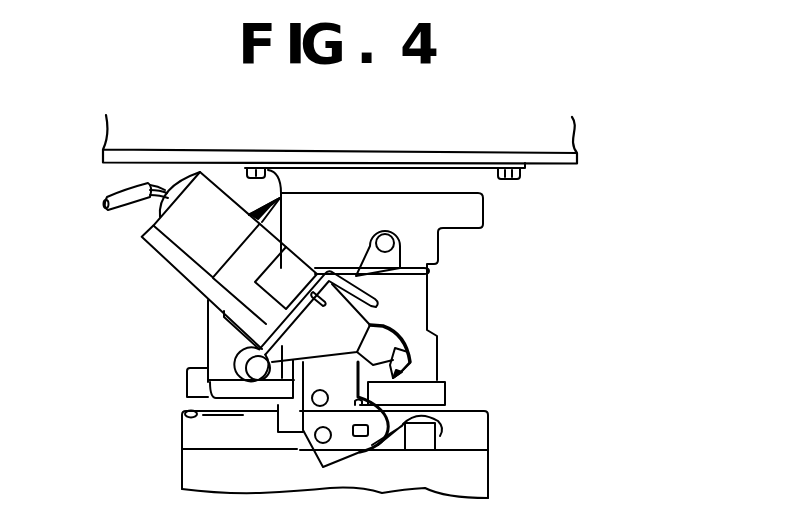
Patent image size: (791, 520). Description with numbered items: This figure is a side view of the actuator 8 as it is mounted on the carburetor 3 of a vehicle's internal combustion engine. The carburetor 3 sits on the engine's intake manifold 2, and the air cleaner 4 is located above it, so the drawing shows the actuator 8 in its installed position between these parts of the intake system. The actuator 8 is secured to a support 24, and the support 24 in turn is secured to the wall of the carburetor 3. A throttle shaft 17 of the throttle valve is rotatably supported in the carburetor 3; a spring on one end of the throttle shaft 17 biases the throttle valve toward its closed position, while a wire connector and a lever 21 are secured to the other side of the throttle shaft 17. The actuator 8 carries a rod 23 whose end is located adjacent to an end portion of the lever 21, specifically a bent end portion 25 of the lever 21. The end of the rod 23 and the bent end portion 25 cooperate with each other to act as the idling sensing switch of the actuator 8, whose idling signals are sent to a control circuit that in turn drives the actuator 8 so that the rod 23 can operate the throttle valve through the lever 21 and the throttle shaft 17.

The intake manifold 2 is at (192, 476).
The carburetor 3 is at (431, 253).
The air cleaner 4 is at (545, 144).
The actuator 8 is at (205, 262).
The throttle shaft 17 is at (362, 433).
The lever 21 is at (357, 458).
The rod 23 is at (368, 360).
The support 24 is at (375, 285).
The bent end portion 25 is at (398, 376).